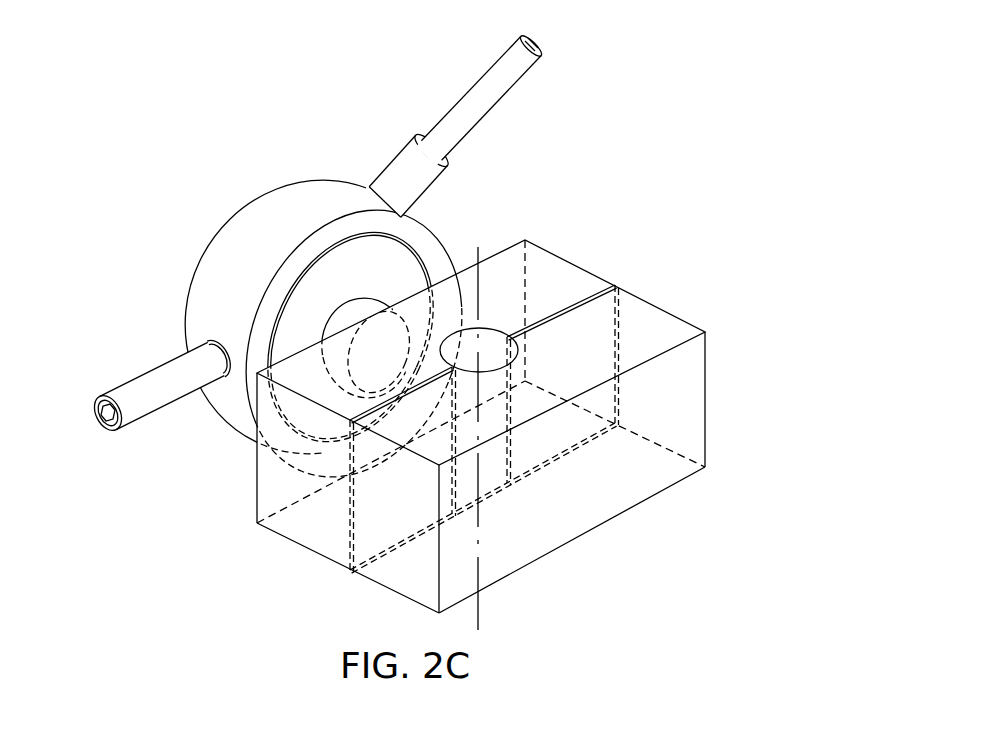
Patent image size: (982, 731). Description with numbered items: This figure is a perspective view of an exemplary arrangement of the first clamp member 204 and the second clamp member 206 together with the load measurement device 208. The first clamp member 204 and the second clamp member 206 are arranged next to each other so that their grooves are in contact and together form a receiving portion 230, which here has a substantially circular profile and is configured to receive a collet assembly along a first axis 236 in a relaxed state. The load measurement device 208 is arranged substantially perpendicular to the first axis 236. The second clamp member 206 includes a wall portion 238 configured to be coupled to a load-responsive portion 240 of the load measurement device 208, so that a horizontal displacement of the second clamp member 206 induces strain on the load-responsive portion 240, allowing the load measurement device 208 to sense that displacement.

The first clamp member 204 is at (545, 389).
The second clamp member 206 is at (497, 291).
The load measurement device 208 is at (271, 322).
The receiving portion 230 is at (565, 433).
The first axis 236 is at (630, 417).
The wall portion 238 is at (484, 364).
The load-responsive portion 240 is at (463, 171).